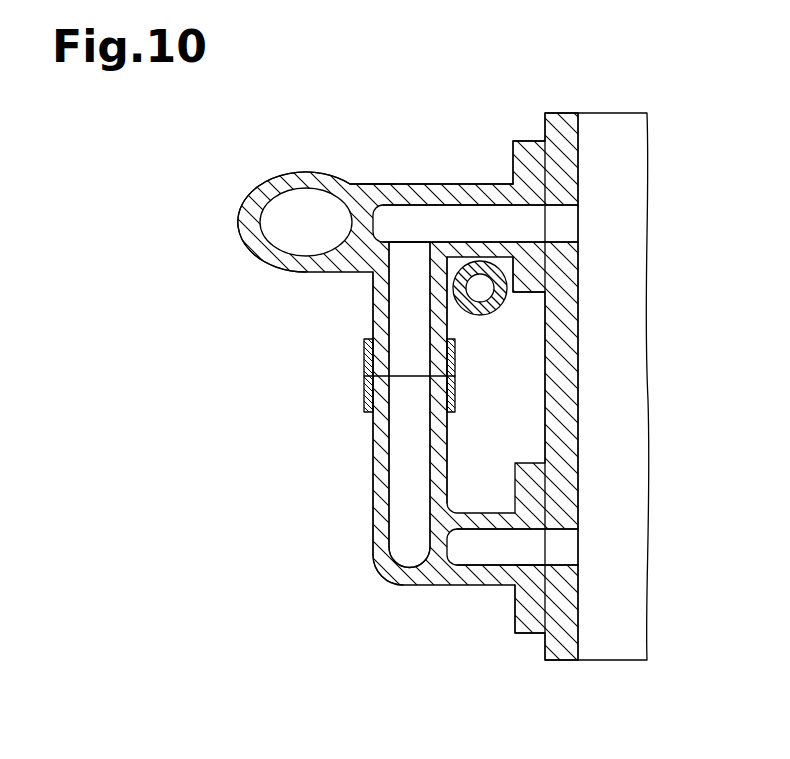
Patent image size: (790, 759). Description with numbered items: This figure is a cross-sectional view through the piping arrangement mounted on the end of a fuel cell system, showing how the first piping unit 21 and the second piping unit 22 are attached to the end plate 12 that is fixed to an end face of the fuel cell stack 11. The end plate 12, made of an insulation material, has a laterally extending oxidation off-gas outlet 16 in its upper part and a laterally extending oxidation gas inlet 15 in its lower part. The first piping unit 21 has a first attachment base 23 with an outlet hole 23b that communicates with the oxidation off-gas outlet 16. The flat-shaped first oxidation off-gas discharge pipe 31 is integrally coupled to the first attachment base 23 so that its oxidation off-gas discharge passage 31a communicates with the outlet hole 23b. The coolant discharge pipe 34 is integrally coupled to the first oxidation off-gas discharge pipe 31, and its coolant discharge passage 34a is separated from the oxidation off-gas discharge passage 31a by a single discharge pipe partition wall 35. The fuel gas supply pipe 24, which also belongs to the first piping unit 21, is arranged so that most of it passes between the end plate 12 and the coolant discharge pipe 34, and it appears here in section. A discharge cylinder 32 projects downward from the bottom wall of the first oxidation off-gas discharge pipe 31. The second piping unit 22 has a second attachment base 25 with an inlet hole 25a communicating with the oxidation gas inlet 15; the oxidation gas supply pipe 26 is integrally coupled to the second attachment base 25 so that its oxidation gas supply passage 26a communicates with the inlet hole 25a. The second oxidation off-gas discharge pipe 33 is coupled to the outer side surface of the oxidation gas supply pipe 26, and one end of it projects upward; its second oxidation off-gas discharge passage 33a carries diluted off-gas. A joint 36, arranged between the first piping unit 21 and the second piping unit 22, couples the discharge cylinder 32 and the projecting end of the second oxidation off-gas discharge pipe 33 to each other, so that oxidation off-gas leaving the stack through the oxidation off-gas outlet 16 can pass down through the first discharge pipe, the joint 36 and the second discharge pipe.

The fuel cell stack 11 is at (612, 128).
The end plate 12 is at (557, 137).
The oxidation gas inlet 15 is at (532, 560).
The oxidation off-gas outlet 16 is at (530, 242).
The first piping unit 21 is at (248, 260).
The second piping unit 22 is at (371, 482).
The first attachment base 23 is at (518, 147).
The outlet hole 23b is at (553, 208).
The fuel gas supply pipe 24 is at (480, 316).
The second attachment base 25 is at (515, 622).
The inlet hole 25a is at (560, 535).
The oxidation gas supply pipe 26 is at (487, 512).
The oxidation gas supply passage 26a is at (460, 550).
The first oxidation off-gas discharge pipe 31 is at (472, 183).
The oxidation off-gas discharge passage 31a is at (427, 218).
The discharge cylinder 32 is at (373, 320).
The second oxidation off-gas discharge pipe 33 is at (371, 508).
The second oxidation off-gas discharge passage 33a is at (405, 556).
The coolant discharge pipe 34 is at (297, 172).
The coolant discharge passage 34a is at (306, 222).
The discharge pipe partition wall 35 is at (378, 186).
The joint 36 is at (371, 378).